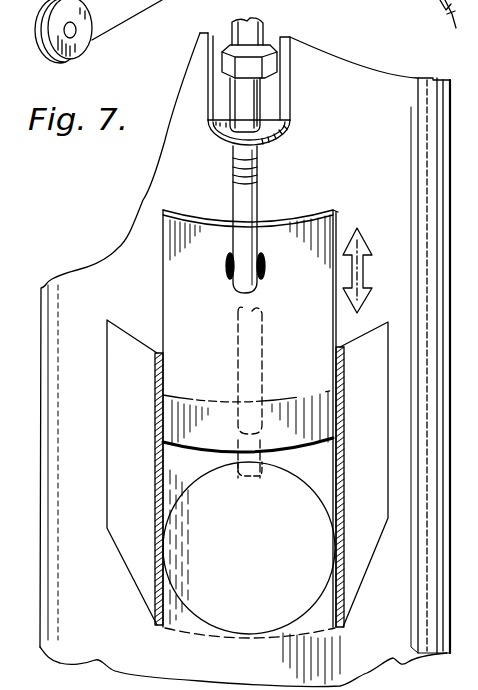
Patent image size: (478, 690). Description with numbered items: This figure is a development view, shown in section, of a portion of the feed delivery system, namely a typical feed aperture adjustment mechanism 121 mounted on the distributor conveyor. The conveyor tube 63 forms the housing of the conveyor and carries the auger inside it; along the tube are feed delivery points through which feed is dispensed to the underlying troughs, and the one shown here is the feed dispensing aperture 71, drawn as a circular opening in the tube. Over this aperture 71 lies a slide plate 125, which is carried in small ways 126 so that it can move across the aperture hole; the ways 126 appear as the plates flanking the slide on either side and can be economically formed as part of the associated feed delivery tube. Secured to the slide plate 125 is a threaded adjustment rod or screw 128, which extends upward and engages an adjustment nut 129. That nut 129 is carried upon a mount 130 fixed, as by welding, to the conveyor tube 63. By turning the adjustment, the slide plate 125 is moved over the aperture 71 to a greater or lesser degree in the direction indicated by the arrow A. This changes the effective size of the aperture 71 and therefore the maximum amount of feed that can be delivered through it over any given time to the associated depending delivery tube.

The conveyor tube 63 is at (380, 130).
The feed delivery aperture 71 is at (268, 560).
The feed aperture adjustment mechanism 121 is at (152, 328).
The slide plate 125 is at (205, 318).
The ways 126 is at (145, 451).
The threaded adjustment rod 128 is at (261, 185).
The adjustment nut 129 is at (278, 62).
The mount 130 is at (280, 92).
The arrow A is at (364, 270).